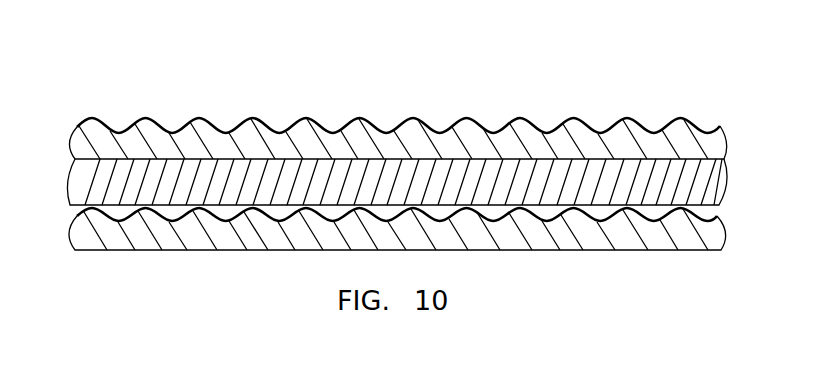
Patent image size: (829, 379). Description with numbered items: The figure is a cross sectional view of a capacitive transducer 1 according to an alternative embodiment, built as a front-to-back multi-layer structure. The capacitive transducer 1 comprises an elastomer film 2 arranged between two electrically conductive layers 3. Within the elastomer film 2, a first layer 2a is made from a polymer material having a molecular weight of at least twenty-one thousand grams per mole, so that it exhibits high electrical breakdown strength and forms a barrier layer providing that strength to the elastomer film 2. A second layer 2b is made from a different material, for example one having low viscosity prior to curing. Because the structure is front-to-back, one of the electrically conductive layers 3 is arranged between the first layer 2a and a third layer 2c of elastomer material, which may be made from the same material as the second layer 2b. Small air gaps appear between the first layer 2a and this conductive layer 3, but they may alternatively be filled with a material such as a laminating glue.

The capacitive transducer 1 is at (612, 50).
The elastomer film 2 is at (735, 130).
The first layer 2a is at (82, 183).
The second layer 2b is at (83, 146).
The third layer 2c is at (83, 236).
The electrically conductive layers 3 is at (565, 128).